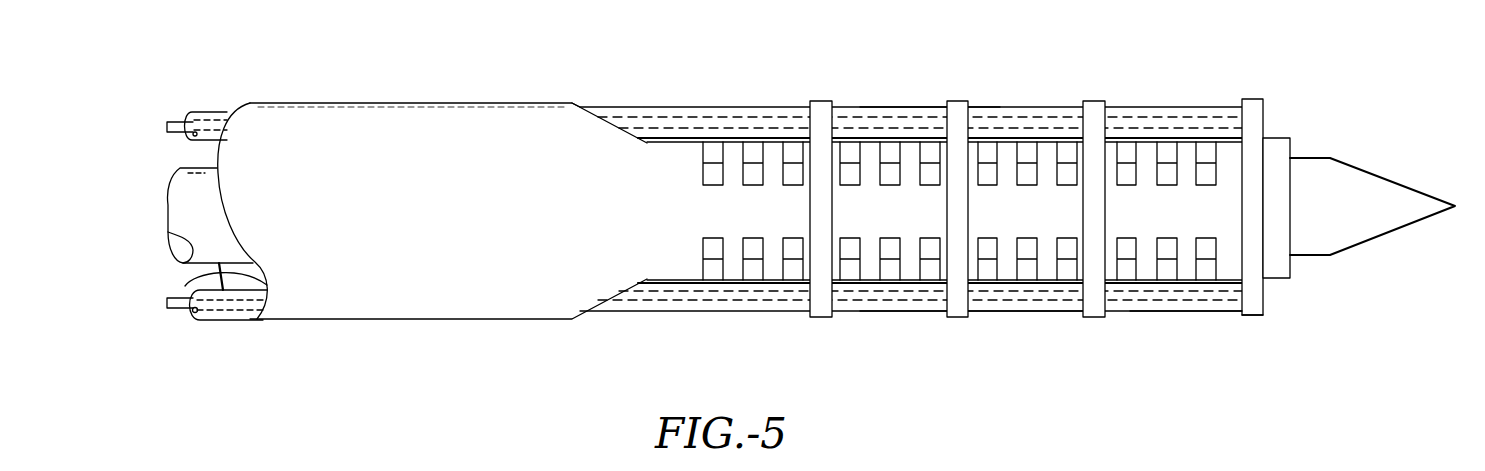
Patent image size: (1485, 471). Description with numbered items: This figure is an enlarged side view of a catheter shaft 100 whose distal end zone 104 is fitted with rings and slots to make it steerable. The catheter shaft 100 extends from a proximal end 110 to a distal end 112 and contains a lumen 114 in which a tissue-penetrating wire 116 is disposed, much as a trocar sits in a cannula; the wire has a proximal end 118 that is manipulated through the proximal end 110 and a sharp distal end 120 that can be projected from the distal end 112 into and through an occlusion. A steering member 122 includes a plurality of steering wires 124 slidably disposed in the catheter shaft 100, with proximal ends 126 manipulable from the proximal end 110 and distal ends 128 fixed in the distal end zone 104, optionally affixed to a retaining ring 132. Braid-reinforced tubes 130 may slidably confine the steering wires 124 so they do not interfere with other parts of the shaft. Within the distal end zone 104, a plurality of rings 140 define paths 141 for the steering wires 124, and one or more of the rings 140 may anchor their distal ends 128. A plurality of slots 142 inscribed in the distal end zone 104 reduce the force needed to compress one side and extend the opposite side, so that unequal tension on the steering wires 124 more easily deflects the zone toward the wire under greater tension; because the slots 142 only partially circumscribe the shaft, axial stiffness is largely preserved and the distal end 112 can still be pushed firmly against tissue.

The catheter shaft 100 is at (572, 103).
The distal end zone 104 is at (884, 105).
The proximal end 110 is at (248, 103).
The distal end 112 is at (1290, 136).
The lumen 114 is at (205, 271).
The tissue-penetrating wire 116 is at (198, 165).
The proximal end 118 is at (180, 170).
The sharp distal end 120 is at (1453, 204).
The steering member 122 is at (648, 107).
The steering wires 124 is at (243, 302).
The proximal ends 126 is at (165, 306).
The distal ends 128 is at (1241, 99).
The braid-reinforced tubes 130 is at (200, 314).
The retaining ring 132 is at (1258, 317).
The rings 140 is at (952, 101).
The paths 141 is at (970, 104).
The slots 142 is at (760, 183).